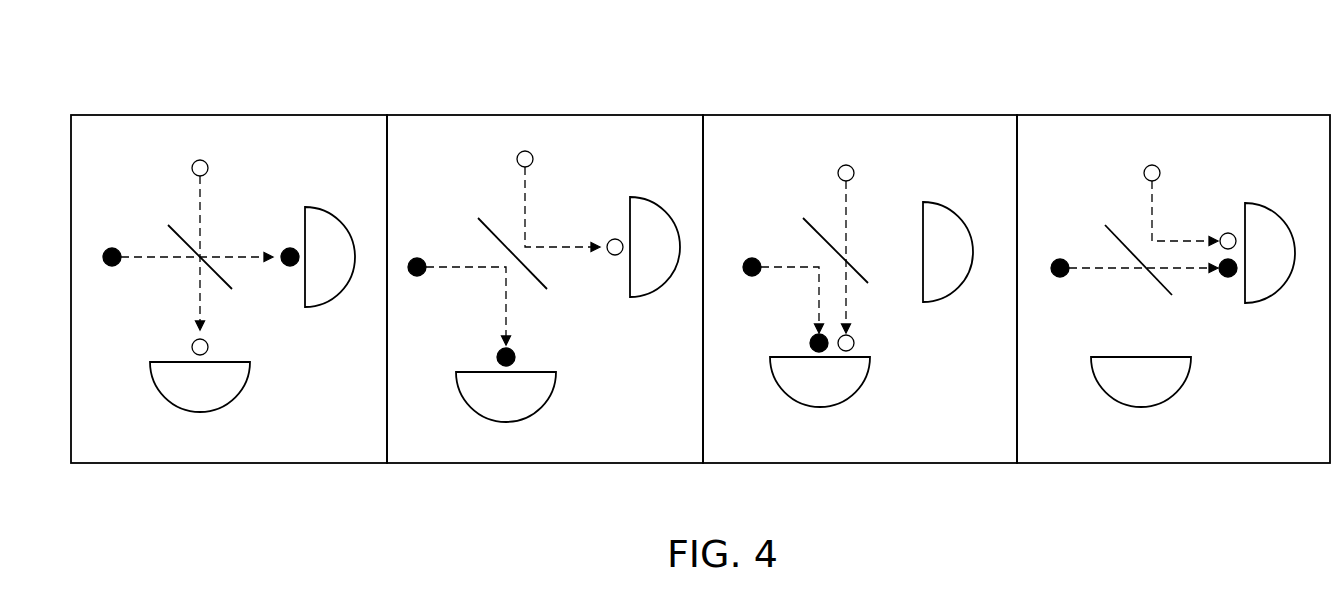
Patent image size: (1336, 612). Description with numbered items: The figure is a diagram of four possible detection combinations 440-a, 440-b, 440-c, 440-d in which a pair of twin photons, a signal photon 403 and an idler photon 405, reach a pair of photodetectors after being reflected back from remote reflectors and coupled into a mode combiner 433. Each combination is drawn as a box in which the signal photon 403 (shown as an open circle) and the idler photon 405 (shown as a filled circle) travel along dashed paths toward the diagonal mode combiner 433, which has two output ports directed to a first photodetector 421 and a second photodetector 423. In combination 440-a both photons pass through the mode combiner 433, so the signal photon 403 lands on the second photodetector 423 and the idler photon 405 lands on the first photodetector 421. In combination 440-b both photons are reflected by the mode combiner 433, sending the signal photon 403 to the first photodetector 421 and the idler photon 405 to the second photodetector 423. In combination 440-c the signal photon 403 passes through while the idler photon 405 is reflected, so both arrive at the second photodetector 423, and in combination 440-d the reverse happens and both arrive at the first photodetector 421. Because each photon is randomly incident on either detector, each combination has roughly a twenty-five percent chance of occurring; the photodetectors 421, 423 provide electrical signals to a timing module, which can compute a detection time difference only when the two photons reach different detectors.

The combination 440-a is at (227, 115).
The combination 440-b is at (555, 115).
The combination 440-c is at (858, 115).
The combination 440-d is at (1172, 115).
The signal photon 403 is at (208, 166).
The idler photon 405 is at (115, 266).
The mode combiner 433 is at (178, 233).
The first photodetector 421 is at (323, 308).
The second photodetector 423 is at (200, 412).